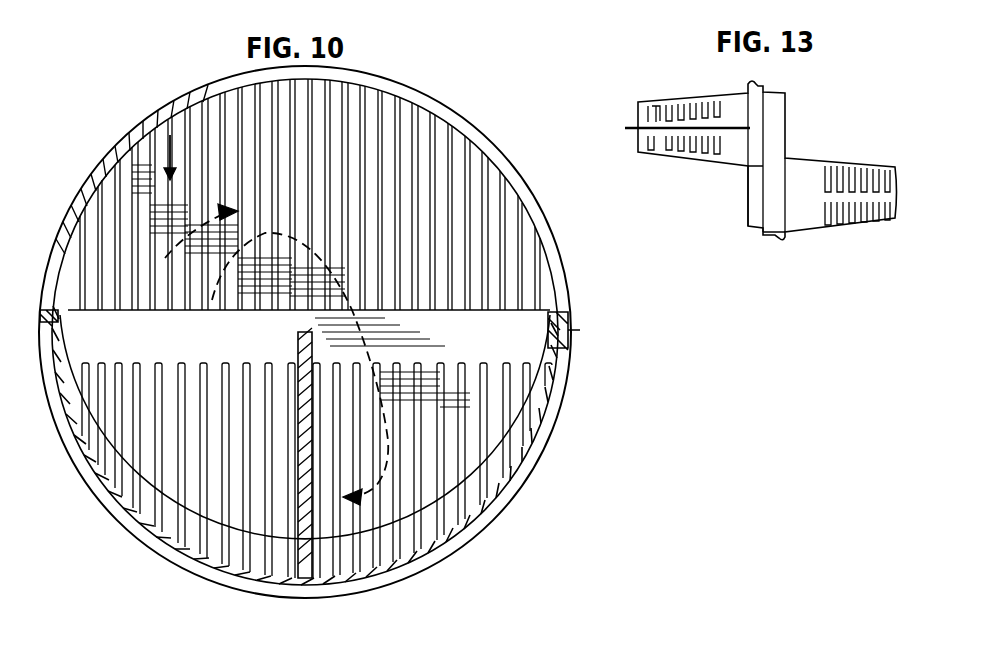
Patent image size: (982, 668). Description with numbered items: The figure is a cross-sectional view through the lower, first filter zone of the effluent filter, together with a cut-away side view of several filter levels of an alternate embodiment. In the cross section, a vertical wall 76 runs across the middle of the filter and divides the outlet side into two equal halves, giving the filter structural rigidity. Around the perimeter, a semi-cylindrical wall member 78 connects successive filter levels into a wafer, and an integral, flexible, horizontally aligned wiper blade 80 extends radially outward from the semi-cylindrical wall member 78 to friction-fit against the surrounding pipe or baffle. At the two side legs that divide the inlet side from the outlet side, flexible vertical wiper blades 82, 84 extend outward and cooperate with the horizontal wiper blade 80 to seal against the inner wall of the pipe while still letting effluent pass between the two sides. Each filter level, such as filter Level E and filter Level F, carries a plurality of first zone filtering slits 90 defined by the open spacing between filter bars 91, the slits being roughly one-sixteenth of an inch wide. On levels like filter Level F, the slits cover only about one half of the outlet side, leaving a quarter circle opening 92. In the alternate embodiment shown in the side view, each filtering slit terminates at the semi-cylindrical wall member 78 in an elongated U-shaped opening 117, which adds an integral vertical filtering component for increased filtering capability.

In FIG. 10, the vertical wall 76 is at (298, 525).
In FIG. 10, the semi-cylindrical wall member 78 is at (385, 572).
In FIG. 13, the semi-cylindrical wall member 78 is at (798, 214).
In FIG. 10, the wiper blade 80 is at (428, 106).
In FIG. 10, the vertical wiper blade 82 is at (44, 306).
In FIG. 10, the vertical wiper blade 84 is at (570, 322).
In FIG. 10, the first zone filtering slit 90 is at (468, 195).
In FIG. 10, the filter bar 91 is at (452, 165).
In FIG. 10, the quarter circle opening 92 is at (180, 132).
In FIG. 13, the elongated U-shaped opening 117 is at (690, 148).
In FIG. 10, the filter Level E is at (230, 130).
In FIG. 10, the filter Level F is at (510, 352).